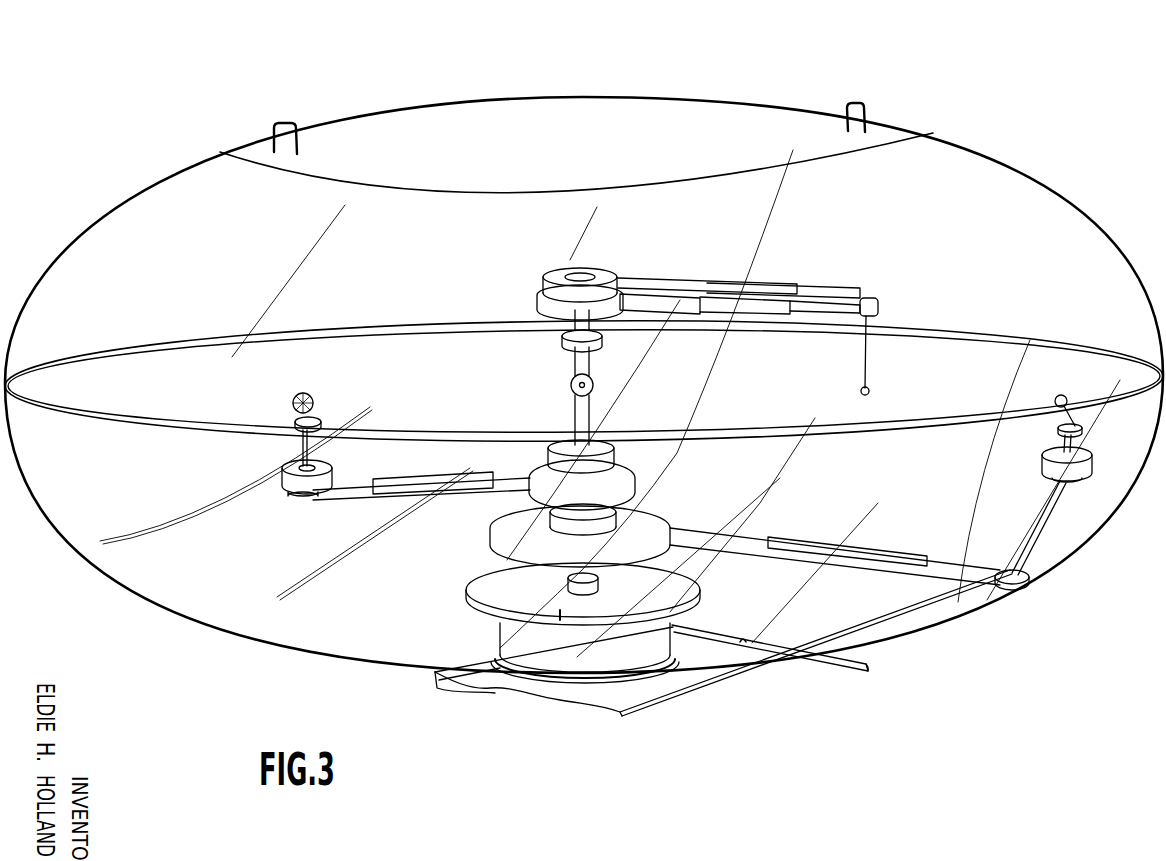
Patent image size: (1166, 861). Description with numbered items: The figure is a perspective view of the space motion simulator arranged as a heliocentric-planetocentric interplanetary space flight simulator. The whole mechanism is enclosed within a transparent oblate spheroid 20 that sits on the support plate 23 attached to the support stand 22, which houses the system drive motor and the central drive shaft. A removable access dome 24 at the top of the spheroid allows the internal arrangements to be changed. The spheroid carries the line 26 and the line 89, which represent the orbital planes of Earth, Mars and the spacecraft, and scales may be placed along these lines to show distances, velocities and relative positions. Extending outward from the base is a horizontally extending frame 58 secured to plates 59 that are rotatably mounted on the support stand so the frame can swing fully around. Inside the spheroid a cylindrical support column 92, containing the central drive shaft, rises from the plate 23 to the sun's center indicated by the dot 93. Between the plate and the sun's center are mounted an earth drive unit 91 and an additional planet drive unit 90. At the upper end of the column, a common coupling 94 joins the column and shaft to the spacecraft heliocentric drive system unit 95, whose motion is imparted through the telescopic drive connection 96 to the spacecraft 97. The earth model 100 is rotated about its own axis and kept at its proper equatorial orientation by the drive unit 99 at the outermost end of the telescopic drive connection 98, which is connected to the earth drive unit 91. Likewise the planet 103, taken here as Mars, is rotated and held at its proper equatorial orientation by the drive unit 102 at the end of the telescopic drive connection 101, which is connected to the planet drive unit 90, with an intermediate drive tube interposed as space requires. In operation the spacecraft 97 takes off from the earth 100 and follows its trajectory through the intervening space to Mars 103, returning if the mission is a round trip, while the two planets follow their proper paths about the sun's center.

The transparent oblate spheroid 20 is at (80, 245).
The support stand 22 is at (636, 668).
The support plate 23 is at (480, 590).
The access dome 24 is at (375, 118).
The ecliptic plane line 26 is at (92, 428).
The horizontally extending frame 58 is at (838, 666).
The plates 59 is at (658, 687).
The orbital plane line 89 is at (75, 400).
The planet drive unit 90 is at (655, 538).
The earth drive unit 91 is at (652, 486).
The cylindrical support column 92 is at (590, 406).
The sun's center 93 is at (571, 388).
The common coupling 94 is at (603, 343).
The spacecraft heliocentric drive system unit 95 is at (537, 302).
The telescopic drive connection 96 is at (730, 300).
The spacecraft 97 is at (868, 393).
The telescopic drive connection 98 is at (415, 485).
The drive unit 99 is at (283, 482).
The earth model 100 is at (314, 398).
The telescopic drive connection 101 is at (800, 540).
The drive unit 102 is at (1052, 470).
The planet 103 is at (1063, 400).